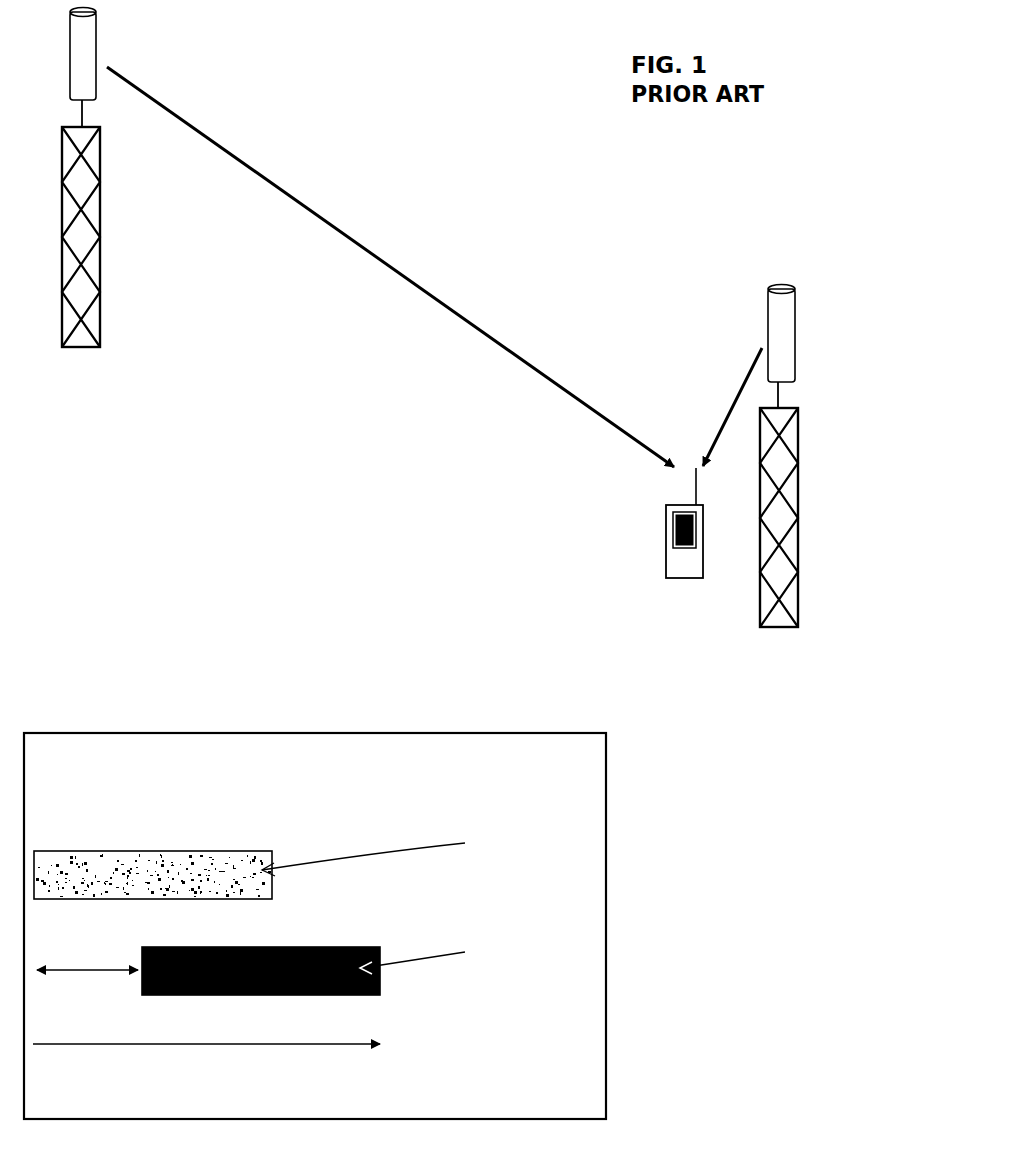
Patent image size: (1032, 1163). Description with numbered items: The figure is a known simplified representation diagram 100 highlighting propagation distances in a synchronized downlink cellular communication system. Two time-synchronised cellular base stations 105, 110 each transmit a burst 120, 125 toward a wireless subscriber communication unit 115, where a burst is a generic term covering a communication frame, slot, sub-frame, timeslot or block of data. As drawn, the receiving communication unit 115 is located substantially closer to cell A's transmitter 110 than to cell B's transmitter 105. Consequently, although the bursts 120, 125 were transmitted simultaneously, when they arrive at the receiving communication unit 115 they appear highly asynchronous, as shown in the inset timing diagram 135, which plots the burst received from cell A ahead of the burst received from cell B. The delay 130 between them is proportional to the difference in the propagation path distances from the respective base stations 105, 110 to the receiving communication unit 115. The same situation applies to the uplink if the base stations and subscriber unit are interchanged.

The prior art wireless system 100 is at (667, 210).
The cellular base station 105 is at (103, 262).
The cellular base station 110 is at (802, 487).
The wireless subscriber communication unit 115 is at (673, 583).
The burst 120 is at (298, 197).
The burst 125 is at (727, 400).
The delay 130 is at (67, 968).
The inset timing diagram 135 is at (610, 873).